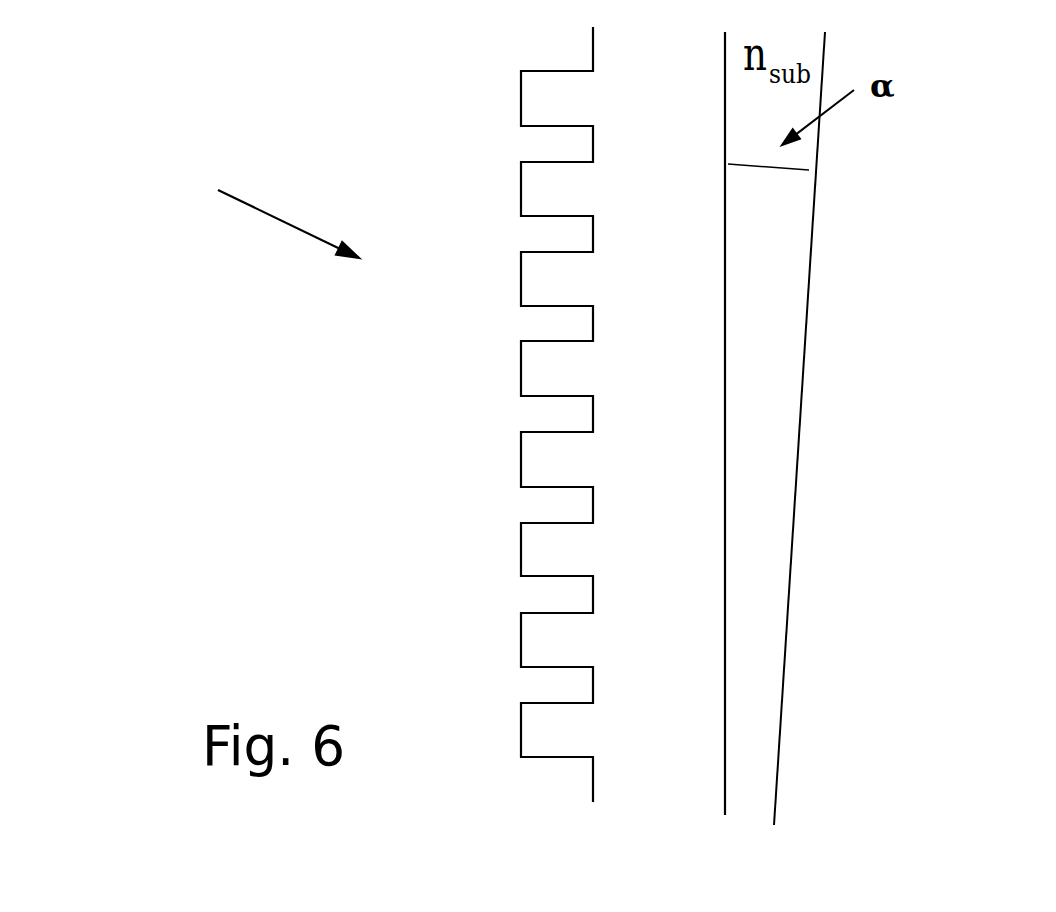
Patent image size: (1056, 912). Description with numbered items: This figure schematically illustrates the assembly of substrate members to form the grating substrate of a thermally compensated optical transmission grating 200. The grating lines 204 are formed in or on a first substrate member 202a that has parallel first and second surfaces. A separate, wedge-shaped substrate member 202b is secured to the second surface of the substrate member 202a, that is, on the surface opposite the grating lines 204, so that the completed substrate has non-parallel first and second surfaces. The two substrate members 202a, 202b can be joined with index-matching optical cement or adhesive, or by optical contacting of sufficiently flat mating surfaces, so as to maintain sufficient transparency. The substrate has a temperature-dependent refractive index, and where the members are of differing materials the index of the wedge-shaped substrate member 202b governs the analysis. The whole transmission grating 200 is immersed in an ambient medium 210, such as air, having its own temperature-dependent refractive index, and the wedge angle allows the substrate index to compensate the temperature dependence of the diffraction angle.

The optical transmission grating 200 is at (248, 200).
The grating lines 204 is at (492, 298).
The first substrate member 202a is at (702, 767).
The wedge-shaped substrate member 202b is at (768, 468).
The ambient medium 210 is at (420, 692).